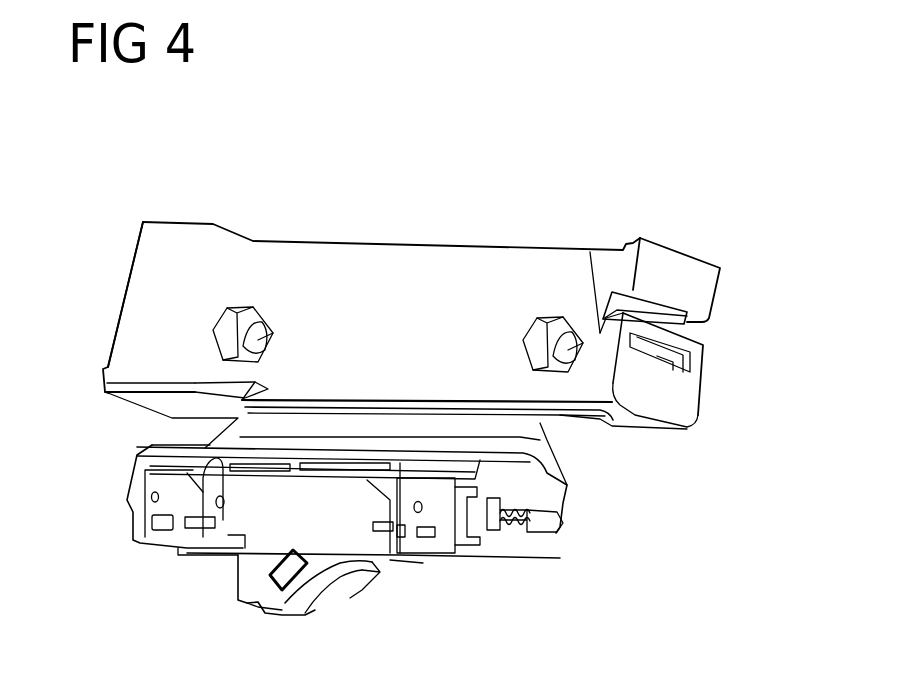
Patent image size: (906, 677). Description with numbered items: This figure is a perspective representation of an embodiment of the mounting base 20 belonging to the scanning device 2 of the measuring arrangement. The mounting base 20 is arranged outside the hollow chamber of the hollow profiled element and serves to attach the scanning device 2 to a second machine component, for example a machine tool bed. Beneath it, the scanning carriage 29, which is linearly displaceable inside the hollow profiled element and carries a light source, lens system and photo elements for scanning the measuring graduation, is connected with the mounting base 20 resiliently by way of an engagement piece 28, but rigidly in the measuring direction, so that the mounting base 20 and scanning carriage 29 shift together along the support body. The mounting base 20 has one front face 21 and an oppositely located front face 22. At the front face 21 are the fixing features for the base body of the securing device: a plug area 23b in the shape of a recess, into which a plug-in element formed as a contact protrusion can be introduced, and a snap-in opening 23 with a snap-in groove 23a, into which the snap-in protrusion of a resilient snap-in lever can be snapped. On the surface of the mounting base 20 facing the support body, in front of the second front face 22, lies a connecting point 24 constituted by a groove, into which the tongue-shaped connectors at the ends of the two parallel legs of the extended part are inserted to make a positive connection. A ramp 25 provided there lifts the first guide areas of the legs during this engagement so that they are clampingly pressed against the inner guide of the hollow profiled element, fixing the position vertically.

The scanning device 2 is at (294, 219).
The mounting base 20 is at (390, 265).
The front face 21 is at (668, 260).
The front face 22 is at (137, 253).
The snap-in opening 23 is at (667, 305).
The snap-in groove 23a is at (600, 333).
The plug area 23b is at (690, 355).
The connecting point 24 is at (236, 404).
The ramp 25 is at (240, 405).
The engagement piece 28 is at (513, 433).
The scanning carriage 29 is at (325, 583).